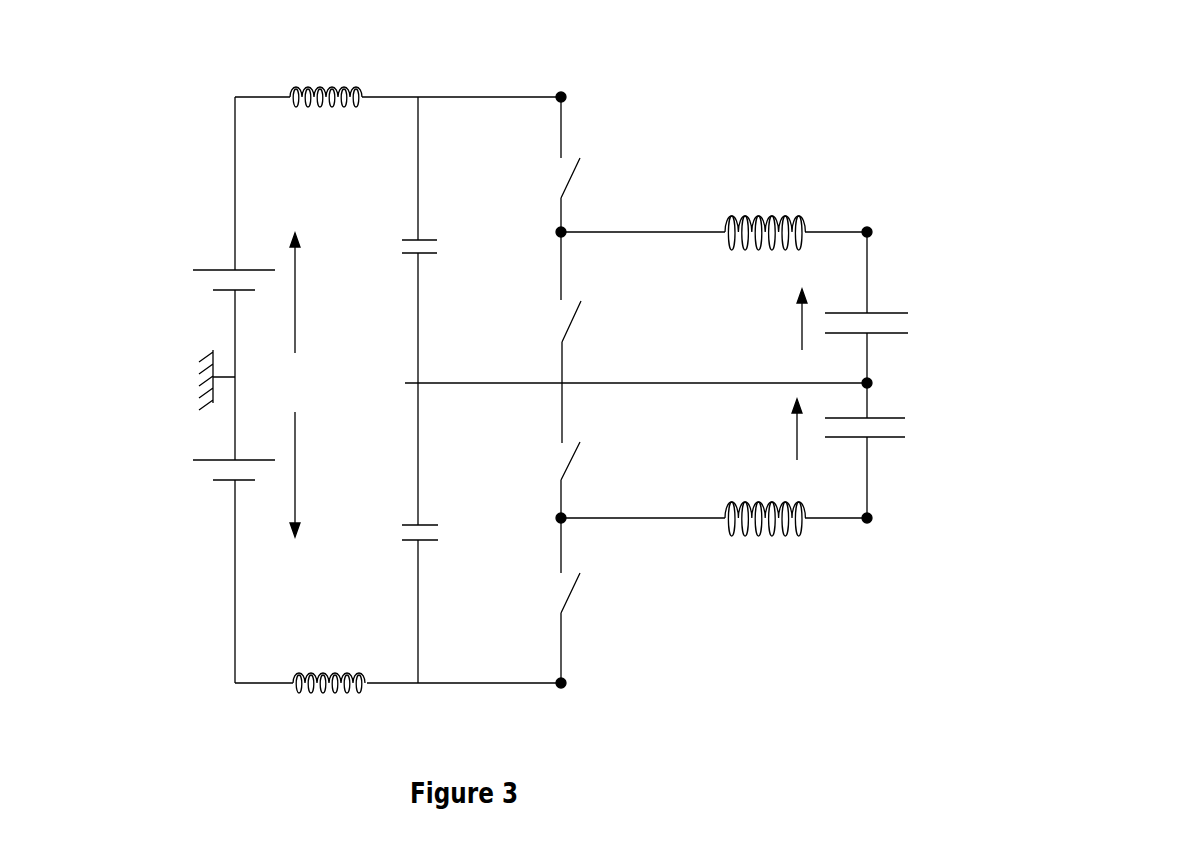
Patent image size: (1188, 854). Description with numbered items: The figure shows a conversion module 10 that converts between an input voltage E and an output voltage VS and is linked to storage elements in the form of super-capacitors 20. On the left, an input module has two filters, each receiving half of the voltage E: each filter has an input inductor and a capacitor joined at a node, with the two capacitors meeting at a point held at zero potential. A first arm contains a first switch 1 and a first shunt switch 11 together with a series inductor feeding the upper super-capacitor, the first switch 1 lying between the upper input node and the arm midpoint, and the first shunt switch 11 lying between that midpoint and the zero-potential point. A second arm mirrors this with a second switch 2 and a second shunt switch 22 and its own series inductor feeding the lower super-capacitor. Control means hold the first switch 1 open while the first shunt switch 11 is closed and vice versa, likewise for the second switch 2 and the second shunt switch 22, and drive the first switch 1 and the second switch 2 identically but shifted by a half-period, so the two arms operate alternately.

The conversion module 10 is at (601, 367).
The super-capacitors 20 is at (908, 300).
The switch k1 1 is at (540, 178).
The switch k11 11 is at (540, 322).
The switch k22 22 is at (540, 461).
The switch k2 2 is at (540, 592).